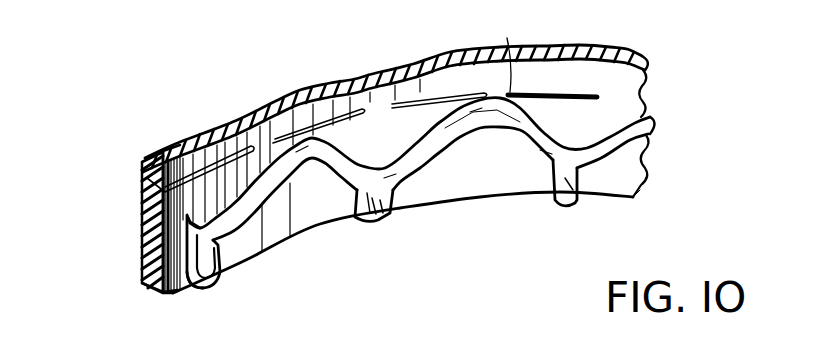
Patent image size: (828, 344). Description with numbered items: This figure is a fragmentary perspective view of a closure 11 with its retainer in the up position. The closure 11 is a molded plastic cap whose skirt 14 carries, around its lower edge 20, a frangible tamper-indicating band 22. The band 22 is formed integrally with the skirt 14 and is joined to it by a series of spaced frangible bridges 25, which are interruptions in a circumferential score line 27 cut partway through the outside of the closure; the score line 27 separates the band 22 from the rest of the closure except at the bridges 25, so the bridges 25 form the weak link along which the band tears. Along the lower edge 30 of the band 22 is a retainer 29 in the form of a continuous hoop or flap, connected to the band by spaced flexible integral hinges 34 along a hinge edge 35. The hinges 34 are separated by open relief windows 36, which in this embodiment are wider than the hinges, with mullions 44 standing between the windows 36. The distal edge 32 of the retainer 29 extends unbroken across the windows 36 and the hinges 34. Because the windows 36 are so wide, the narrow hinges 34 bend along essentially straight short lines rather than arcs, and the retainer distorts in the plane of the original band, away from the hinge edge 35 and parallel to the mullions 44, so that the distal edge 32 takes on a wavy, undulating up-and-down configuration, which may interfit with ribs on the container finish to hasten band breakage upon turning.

The closure 11 is at (712, 54).
The skirt 14 is at (172, 150).
The lower edge 20 is at (143, 170).
The tamper-indicating band 22 is at (125, 264).
The frangible bridges 25 is at (373, 110).
The score line 27 is at (487, 97).
The retainer 29 is at (650, 127).
The lower edge 30 is at (143, 205).
The distal edge 32 is at (380, 167).
The hinges 34 is at (352, 218).
The hinge edge 35 is at (173, 295).
The windows 36 is at (453, 144).
The mullions 44 is at (380, 204).